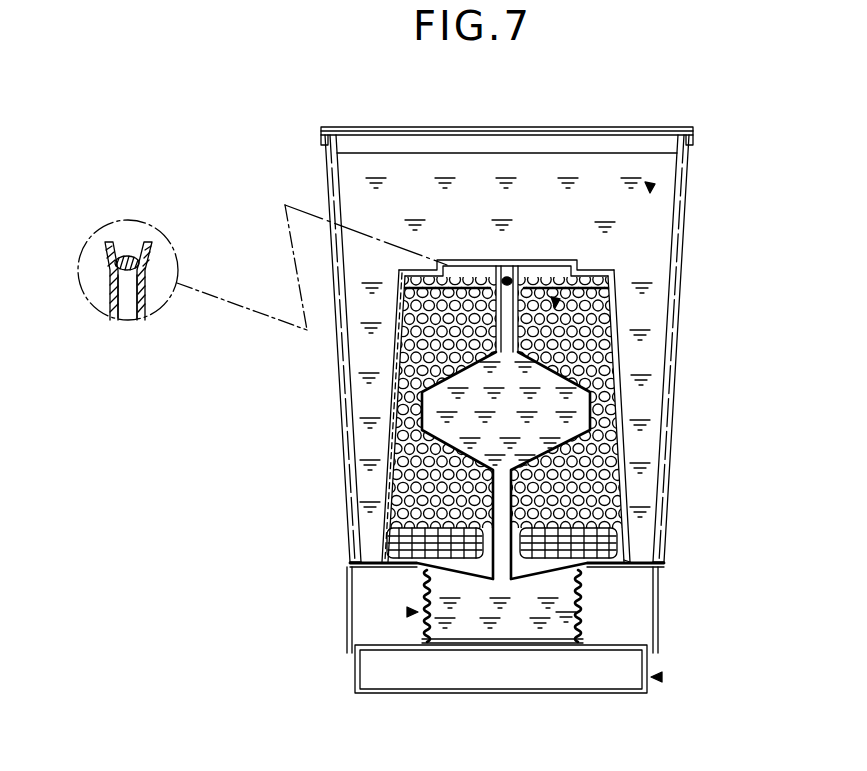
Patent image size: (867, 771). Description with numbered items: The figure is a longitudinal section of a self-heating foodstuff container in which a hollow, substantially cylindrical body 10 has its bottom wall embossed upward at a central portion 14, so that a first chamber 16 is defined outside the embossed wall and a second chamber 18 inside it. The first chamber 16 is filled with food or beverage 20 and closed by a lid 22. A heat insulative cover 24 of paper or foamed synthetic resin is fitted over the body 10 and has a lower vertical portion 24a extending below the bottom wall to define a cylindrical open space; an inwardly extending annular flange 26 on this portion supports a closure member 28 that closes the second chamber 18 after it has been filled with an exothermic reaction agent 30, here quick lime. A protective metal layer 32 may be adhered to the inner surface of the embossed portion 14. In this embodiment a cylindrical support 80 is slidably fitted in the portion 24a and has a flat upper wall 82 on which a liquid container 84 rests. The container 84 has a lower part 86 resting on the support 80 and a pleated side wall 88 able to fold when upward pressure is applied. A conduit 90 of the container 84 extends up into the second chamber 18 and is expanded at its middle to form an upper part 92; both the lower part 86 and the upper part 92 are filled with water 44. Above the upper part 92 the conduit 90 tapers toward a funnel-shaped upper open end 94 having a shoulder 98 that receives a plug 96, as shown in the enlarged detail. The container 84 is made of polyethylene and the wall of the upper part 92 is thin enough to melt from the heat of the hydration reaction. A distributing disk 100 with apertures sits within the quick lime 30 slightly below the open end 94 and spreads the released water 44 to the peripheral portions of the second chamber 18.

The body 10 is at (691, 172).
The central portion 14 is at (595, 265).
The first chamber 16 is at (651, 188).
The second chamber 18 is at (556, 300).
The food or beverage 20 is at (417, 210).
The lid 22 is at (515, 128).
The heat insulative cover 24 is at (683, 243).
The lower vertical portion 24a is at (347, 577).
The annular flange 26 is at (606, 582).
The closure member 28 is at (617, 530).
The exothermic reaction agent 30 is at (405, 342).
The protective metal layer 32 is at (614, 363).
The water 44 is at (548, 426).
The cylindrical support 80 is at (660, 677).
The flat upper wall 82 is at (607, 652).
The liquid container 84 is at (410, 612).
The lower part 86 is at (467, 643).
The pleated side wall 88 is at (584, 612).
The conduit 90 is at (398, 520).
The upper part 92 is at (397, 413).
The upper open end 94 is at (155, 257).
The plug 96 is at (127, 254).
The shoulder 98 is at (140, 293).
The distributing disk 100 is at (402, 280).